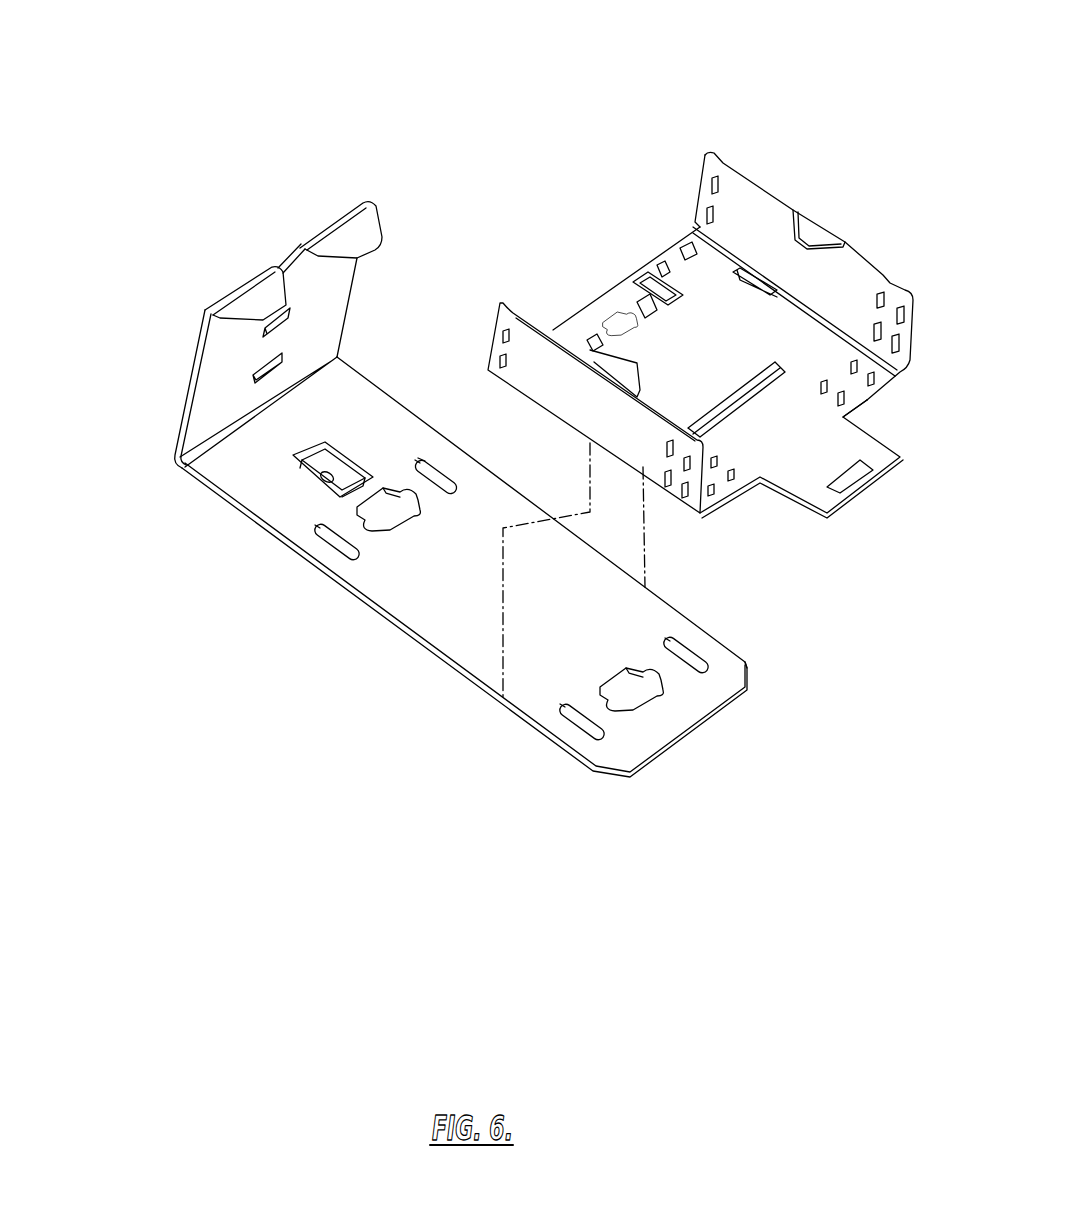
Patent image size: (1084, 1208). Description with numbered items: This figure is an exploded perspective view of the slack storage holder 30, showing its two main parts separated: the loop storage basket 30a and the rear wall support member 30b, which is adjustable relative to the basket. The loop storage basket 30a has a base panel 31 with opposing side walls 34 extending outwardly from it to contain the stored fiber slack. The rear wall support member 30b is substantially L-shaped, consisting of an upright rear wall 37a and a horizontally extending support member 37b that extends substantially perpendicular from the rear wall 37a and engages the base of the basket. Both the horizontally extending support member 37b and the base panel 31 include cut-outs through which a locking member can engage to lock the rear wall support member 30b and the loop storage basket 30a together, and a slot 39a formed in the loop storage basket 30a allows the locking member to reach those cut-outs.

The slack storage holder 30 is at (517, 118).
The loop storage basket 30a is at (751, 198).
The rear wall support member 30b is at (323, 607).
The base panel 31 is at (878, 391).
The side walls 34 is at (592, 411).
The rear wall 37a is at (187, 397).
The horizontally extending support member 37b is at (663, 725).
The slot 39a is at (641, 285).